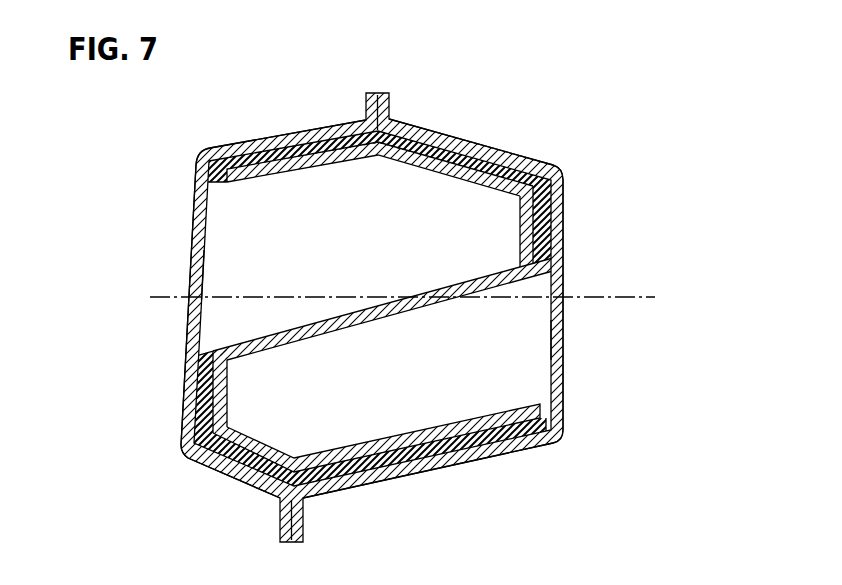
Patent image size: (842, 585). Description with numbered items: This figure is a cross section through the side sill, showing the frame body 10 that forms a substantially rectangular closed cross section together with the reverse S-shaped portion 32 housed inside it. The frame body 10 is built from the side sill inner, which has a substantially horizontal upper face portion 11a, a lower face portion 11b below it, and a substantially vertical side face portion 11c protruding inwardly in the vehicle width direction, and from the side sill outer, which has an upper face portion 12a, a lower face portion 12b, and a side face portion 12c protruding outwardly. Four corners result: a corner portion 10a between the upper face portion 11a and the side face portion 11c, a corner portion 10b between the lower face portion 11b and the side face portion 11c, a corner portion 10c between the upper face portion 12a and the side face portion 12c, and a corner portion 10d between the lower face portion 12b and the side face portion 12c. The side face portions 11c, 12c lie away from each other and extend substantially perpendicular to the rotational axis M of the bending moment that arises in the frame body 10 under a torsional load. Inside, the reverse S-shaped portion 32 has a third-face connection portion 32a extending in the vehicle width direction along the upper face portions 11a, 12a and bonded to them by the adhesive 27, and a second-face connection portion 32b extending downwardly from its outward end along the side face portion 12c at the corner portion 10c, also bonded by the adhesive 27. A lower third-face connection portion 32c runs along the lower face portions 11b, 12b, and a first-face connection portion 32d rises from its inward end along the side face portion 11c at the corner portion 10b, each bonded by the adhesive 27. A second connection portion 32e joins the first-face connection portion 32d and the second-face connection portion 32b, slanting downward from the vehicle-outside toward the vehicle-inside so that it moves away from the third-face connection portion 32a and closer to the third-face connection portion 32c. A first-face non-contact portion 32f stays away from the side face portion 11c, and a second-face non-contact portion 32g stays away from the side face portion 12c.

The frame body 10 is at (525, 128).
The corner portion 10a is at (197, 157).
The corner portion 10b is at (183, 454).
The corner portion 10c is at (560, 166).
The corner portion 10d is at (564, 440).
The upper face portion 11a is at (231, 146).
The lower face portion 11b is at (215, 470).
The side face portion 11c is at (192, 237).
The upper face portion 12a is at (440, 124).
The lower face portion 12b is at (366, 486).
The side face portion 12c is at (556, 229).
The adhesive 27 is at (304, 147).
The reverse S-shaped portion 32 is at (374, 307).
The third-face connection portion 32a is at (329, 164).
The second-face connection portion 32b is at (524, 226).
The third-face connection portion 32c is at (410, 433).
The first-face connection portion 32d is at (228, 389).
The second connection portion 32e is at (423, 293).
The first-face non-contact portion 32f is at (221, 272).
The second-face non-contact portion 32g is at (535, 340).
The rotational axis M is at (416, 298).